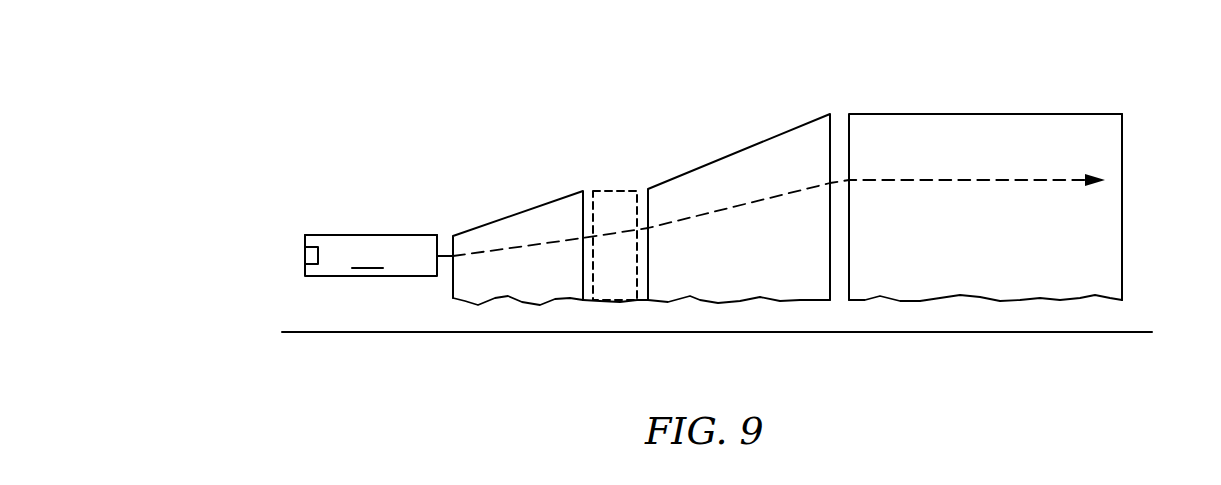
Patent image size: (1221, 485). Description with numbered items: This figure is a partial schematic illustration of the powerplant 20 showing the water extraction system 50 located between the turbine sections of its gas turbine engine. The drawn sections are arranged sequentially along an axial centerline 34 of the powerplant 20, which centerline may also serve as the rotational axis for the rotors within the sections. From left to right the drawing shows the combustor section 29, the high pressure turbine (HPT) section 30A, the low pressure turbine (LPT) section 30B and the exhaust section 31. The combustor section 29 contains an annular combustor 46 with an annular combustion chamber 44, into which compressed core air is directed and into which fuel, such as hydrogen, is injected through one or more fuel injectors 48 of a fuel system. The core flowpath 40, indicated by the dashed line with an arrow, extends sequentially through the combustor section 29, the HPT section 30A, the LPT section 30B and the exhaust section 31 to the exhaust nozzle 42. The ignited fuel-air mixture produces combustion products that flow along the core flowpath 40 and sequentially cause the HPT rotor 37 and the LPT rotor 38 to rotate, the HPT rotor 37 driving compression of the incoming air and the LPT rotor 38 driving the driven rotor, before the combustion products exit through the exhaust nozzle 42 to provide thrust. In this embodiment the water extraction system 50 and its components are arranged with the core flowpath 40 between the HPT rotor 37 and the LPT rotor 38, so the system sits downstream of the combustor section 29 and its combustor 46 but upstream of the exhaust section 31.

The powerplant 20 is at (272, 122).
The combustor section 29 is at (380, 202).
The high pressure turbine (HPT) section 30A is at (500, 180).
The low pressure turbine (LPT) section 30B is at (773, 106).
The exhaust section 31 is at (996, 88).
The axial centerline 34 is at (306, 336).
The HPT rotor 37 is at (512, 302).
The LPT rotor 38 is at (698, 302).
The core flowpath 40 is at (727, 207).
The exhaust nozzle 42 is at (1122, 140).
The combustion chamber 44 is at (370, 254).
The combustor 46 is at (410, 235).
The fuel injector 48 is at (313, 247).
The water extraction system 50 is at (614, 178).